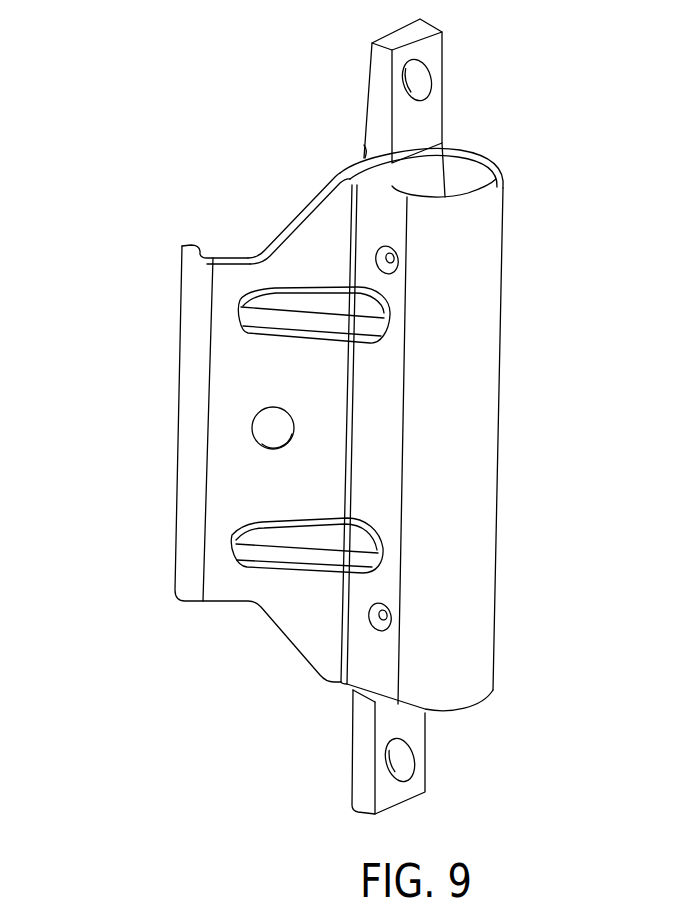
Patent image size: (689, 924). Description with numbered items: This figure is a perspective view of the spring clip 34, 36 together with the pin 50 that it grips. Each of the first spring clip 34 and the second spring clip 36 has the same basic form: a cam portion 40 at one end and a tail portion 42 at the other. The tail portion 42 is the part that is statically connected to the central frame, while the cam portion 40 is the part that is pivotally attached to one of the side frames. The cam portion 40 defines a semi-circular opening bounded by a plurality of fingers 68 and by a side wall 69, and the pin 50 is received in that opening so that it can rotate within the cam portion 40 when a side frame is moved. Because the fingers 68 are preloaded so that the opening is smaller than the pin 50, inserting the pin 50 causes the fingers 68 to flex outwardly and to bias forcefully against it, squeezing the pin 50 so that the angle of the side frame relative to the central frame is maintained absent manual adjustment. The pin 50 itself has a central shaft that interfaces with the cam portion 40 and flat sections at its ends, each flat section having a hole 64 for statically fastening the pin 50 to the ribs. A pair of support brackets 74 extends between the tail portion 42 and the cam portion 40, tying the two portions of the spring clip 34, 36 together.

The first spring clip 34 is at (308, 412).
The second spring clip 36 is at (338, 413).
The cam portion 40 is at (482, 453).
The tail portion 42 is at (193, 423).
The pin 50 is at (433, 413).
The hole 64 is at (422, 85).
The finger 68 is at (458, 179).
The side wall 69 is at (388, 212).
The support bracket 74 is at (318, 316).